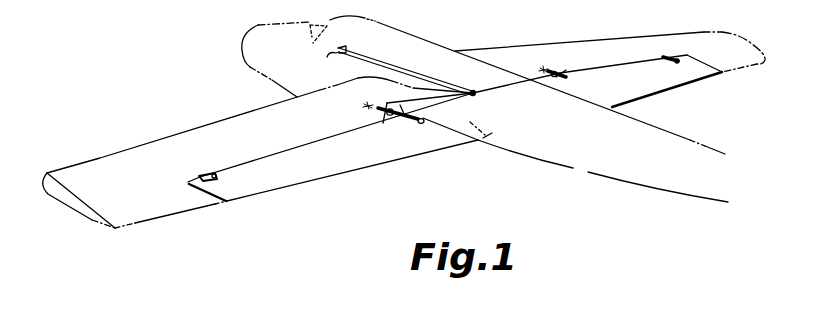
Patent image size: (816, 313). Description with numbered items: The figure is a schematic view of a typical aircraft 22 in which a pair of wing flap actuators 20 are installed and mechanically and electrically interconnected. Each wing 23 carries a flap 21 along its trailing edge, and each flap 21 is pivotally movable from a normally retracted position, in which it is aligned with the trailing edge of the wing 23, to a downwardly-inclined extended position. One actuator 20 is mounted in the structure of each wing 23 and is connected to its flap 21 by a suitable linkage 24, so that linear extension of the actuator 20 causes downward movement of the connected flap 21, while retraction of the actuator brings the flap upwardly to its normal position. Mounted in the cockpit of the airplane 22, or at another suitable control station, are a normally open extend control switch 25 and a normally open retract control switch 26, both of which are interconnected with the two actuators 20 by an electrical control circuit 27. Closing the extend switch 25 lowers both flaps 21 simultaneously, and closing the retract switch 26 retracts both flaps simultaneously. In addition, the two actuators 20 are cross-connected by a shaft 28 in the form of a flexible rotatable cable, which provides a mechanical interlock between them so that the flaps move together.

The actuator 20 is at (383, 124).
The wing flap 21 is at (308, 175).
The aircraft 22 is at (591, 167).
The wing 23 is at (201, 130).
The linkage 24 is at (415, 123).
The extend control switch 25 is at (330, 57).
The retract control switch 26 is at (343, 54).
The electrical control circuit 27 is at (404, 44).
The shaft 28 is at (473, 96).